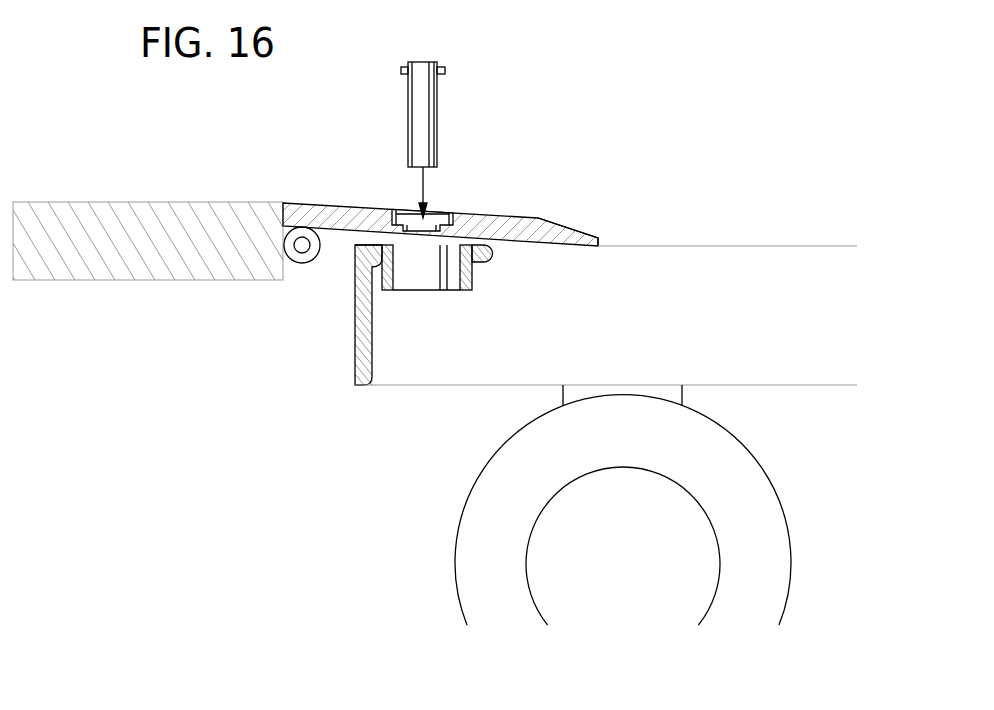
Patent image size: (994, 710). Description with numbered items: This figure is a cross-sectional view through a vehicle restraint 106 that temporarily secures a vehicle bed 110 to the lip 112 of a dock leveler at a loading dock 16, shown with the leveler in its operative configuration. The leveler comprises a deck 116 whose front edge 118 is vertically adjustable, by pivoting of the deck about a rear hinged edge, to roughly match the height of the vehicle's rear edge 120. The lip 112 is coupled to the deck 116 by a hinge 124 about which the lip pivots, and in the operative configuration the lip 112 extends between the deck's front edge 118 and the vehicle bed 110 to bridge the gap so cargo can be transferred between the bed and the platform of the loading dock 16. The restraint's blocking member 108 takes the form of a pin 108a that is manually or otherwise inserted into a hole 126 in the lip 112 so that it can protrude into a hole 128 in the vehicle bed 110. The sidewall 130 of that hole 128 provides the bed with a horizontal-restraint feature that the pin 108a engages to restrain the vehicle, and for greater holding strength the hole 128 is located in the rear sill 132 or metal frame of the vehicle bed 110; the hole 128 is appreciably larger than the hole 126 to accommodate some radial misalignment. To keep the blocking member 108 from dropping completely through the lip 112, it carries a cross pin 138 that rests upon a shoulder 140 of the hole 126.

The loading dock 16 is at (365, 498).
The vehicle restraint 106 is at (470, 78).
The blocking member 108 is at (440, 142).
The pin 108a is at (438, 108).
The vehicle bed 110 is at (695, 245).
The lip 112 is at (530, 218).
The deck 116 is at (118, 202).
The front edge 118 is at (296, 212).
The rear edge 120 is at (355, 257).
The hinge 124 is at (301, 263).
The hole 126 is at (437, 210).
The hole 128 is at (393, 268).
The sidewall 130 is at (422, 267).
The rear sill 132 is at (364, 245).
The cross pin 138 is at (390, 70).
The shoulder 140 is at (398, 210).